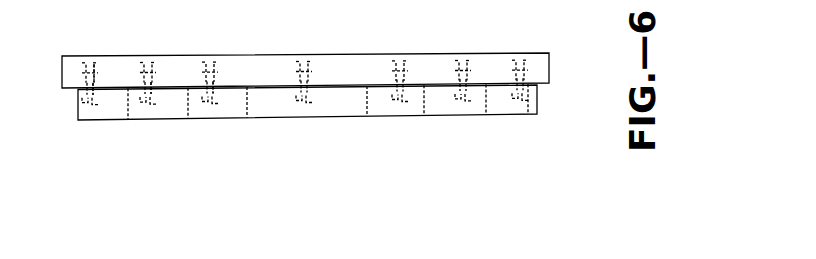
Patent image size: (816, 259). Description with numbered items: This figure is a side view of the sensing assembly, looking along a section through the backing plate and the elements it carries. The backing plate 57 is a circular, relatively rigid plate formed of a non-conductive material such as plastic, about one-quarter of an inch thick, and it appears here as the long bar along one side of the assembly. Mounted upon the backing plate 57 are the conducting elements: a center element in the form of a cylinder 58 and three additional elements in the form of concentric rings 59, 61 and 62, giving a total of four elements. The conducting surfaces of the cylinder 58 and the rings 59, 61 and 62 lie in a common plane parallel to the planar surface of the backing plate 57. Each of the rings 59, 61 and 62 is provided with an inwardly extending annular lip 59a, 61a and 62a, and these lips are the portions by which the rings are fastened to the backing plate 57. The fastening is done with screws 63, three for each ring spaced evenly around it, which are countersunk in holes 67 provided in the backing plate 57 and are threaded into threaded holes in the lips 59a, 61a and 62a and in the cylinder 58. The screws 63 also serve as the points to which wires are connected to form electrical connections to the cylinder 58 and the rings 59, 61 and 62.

The backing plate 57 is at (62, 77).
The cylinder 58 is at (325, 103).
The concentric ring 59 is at (197, 125).
The annular lip 59a is at (218, 125).
The concentric ring 61 is at (130, 124).
The annular lip 61a is at (147, 128).
The concentric ring 62 is at (76, 124).
The annular lip 62a is at (97, 128).
The screws 63 is at (88, 58).
The holes 67 is at (86, 58).